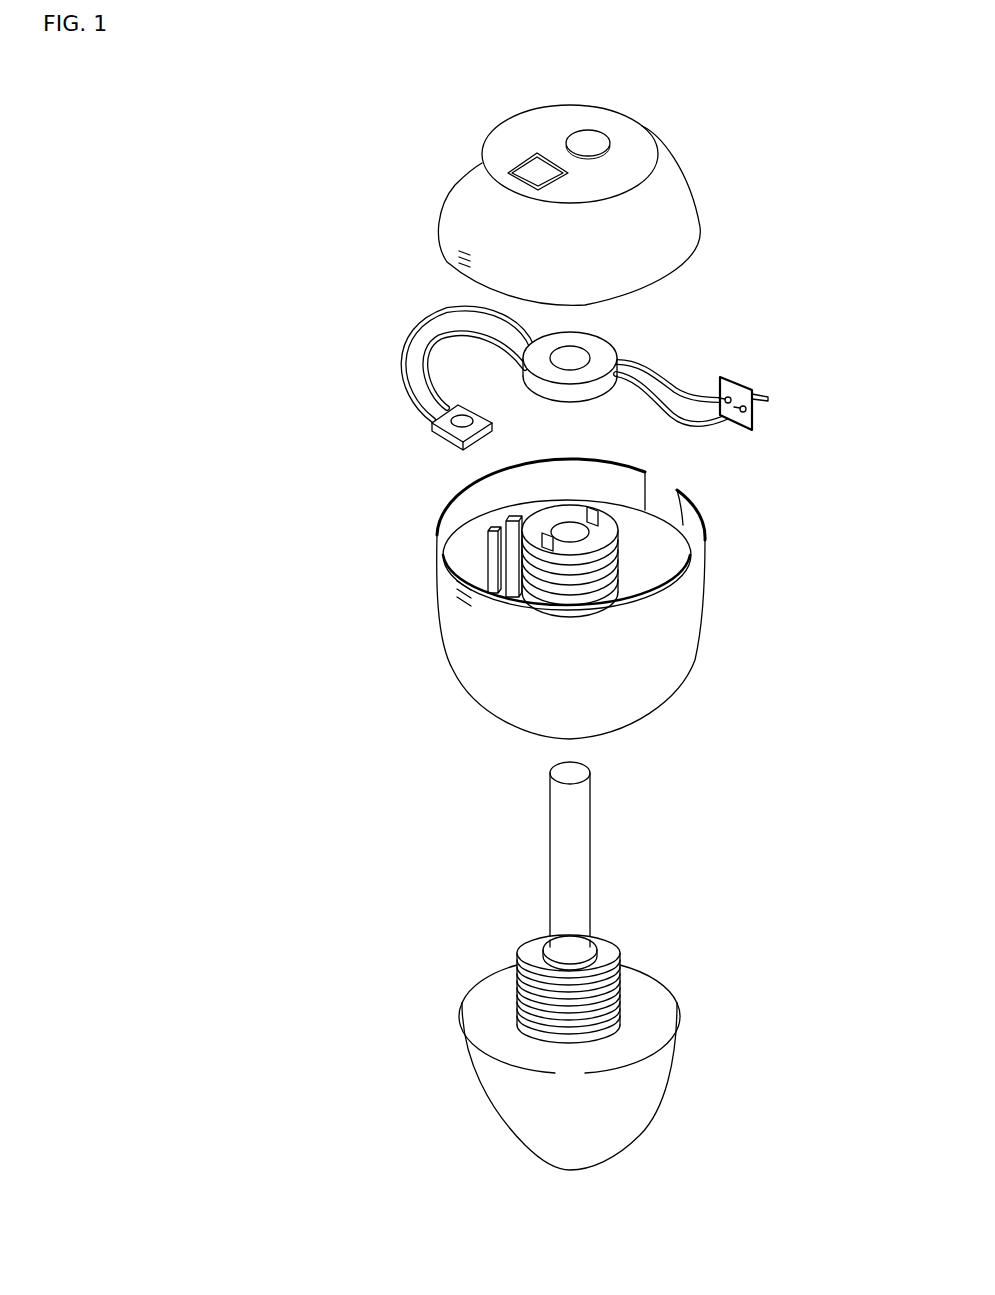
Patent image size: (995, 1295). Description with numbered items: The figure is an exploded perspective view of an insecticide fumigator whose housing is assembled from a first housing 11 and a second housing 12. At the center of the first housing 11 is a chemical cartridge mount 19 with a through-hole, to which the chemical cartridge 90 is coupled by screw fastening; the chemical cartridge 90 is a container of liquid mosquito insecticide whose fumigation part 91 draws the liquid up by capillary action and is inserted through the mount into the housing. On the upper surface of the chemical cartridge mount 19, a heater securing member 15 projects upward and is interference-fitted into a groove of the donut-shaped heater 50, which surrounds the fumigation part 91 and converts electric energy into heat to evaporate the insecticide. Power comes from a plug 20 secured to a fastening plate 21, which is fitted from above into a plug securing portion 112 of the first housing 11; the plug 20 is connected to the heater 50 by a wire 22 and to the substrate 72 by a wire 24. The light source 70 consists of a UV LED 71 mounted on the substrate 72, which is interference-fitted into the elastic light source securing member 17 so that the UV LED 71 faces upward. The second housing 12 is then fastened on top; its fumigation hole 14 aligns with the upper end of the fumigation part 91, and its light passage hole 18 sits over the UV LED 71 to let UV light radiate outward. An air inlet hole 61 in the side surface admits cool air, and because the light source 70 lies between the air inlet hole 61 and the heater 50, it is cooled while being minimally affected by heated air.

The first housing 11 is at (606, 595).
The second housing 12 is at (455, 182).
The fumigation hole 14 is at (578, 140).
The heater securing member 15 is at (592, 507).
The light source securing member 17 is at (487, 541).
The light passage hole 18 is at (522, 164).
The chemical cartridge mount 19 is at (510, 567).
The plug 20 is at (745, 375).
The fastening plate 21 is at (735, 372).
The wire 22 is at (670, 374).
The wire 24 is at (396, 357).
The heater 50 is at (611, 348).
The air inlet hole 61 is at (447, 257).
The light source 70 is at (387, 449).
The UV LED 71 is at (430, 424).
The substrate 72 is at (458, 442).
The chemical cartridge 90 is at (652, 1087).
The fumigation part 91 is at (578, 845).
The plug securing portion 112 is at (648, 489).